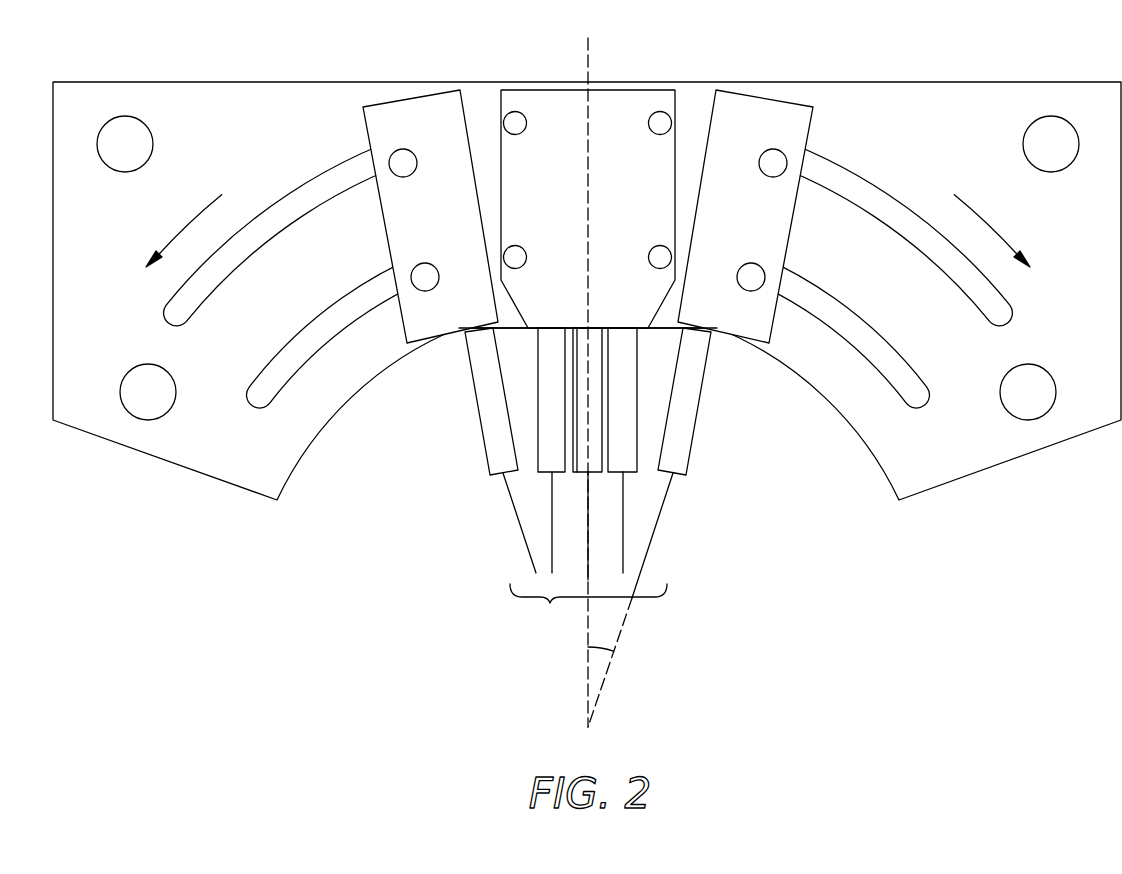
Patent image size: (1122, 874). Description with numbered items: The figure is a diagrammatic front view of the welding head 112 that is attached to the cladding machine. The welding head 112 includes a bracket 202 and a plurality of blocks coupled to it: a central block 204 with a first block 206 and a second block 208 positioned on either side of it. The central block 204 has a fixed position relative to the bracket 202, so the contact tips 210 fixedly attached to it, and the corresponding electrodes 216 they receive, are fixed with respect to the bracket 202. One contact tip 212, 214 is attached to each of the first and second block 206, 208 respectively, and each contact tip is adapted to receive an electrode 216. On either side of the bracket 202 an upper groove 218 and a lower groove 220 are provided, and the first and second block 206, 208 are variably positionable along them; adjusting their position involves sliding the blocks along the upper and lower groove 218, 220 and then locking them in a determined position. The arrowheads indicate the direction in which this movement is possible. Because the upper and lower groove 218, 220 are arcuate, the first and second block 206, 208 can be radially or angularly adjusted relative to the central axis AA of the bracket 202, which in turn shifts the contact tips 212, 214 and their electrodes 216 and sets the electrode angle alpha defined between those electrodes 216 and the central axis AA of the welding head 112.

The welding head 112 is at (587, 382).
The bracket 202 is at (287, 113).
The central block 204 is at (638, 224).
The first block 206 is at (450, 224).
The second block 208 is at (760, 224).
The contact tips 210 is at (547, 428).
The contact tip 212 is at (474, 383).
The contact tip 214 is at (703, 382).
The electrode 216 is at (588, 554).
The upper groove 218 is at (273, 203).
The lower groove 220 is at (340, 337).